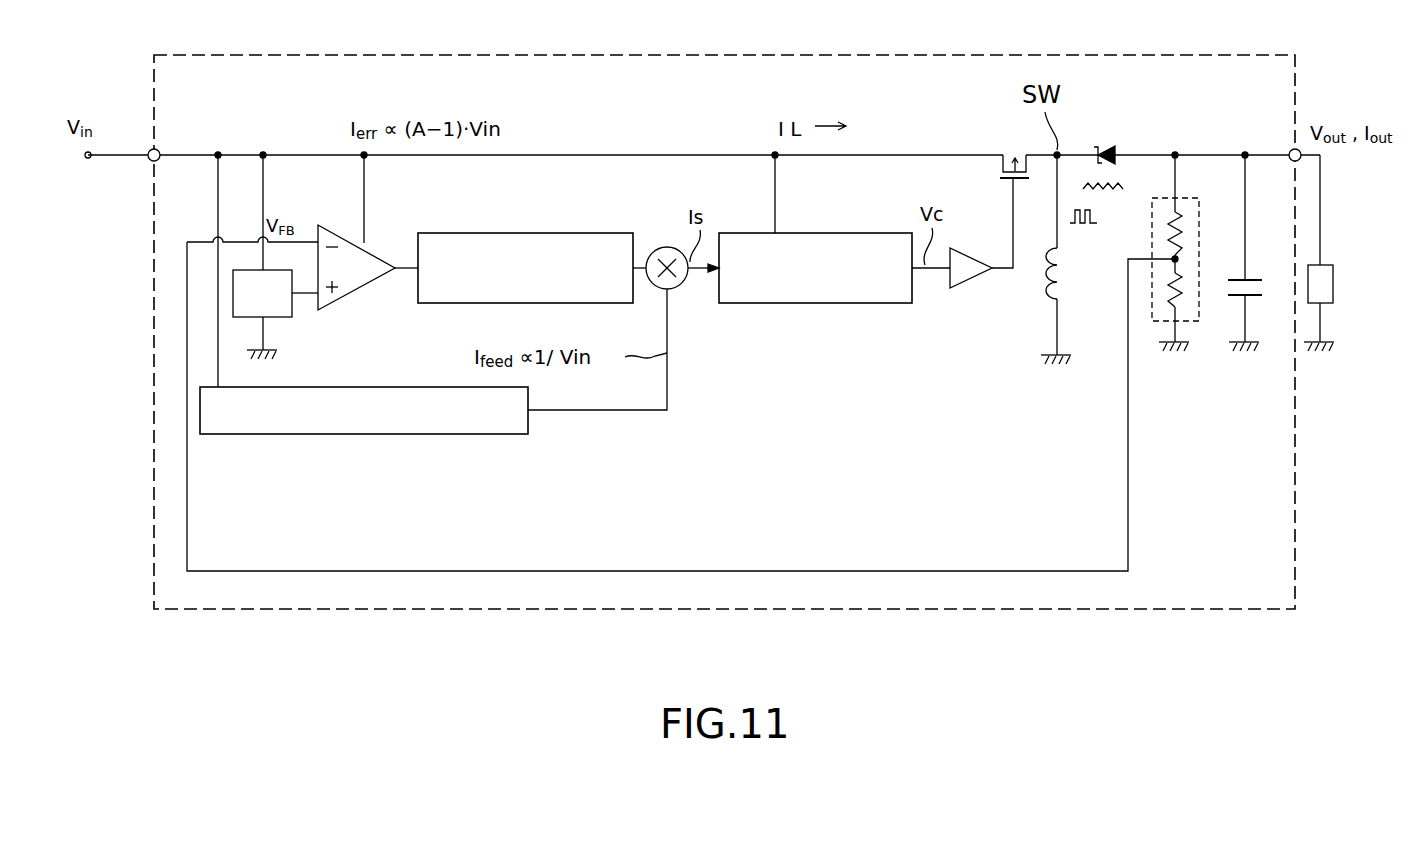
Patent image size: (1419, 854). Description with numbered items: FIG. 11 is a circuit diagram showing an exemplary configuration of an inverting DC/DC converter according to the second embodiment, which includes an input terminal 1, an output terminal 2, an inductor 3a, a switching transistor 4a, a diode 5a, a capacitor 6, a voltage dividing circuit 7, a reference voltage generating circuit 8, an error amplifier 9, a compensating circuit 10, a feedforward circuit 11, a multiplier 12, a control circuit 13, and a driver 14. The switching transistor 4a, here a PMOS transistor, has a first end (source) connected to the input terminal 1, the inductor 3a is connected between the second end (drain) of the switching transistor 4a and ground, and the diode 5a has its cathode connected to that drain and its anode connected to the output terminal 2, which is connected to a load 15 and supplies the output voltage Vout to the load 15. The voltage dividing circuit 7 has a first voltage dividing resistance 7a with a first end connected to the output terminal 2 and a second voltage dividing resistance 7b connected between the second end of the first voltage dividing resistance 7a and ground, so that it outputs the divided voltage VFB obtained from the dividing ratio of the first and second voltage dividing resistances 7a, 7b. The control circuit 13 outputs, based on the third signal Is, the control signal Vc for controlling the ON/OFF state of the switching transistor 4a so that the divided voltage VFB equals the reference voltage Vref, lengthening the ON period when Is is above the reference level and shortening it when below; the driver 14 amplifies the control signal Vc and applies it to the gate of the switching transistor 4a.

The input terminal 1 is at (150, 150).
The output terminal 2 is at (1290, 150).
The inductor 3a is at (1068, 275).
The switching transistor 4a is at (1008, 160).
The diode 5a is at (1105, 140).
The capacitor 6 is at (1250, 275).
The voltage dividing circuit 7 is at (1168, 229).
The first voltage dividing resistance 7a is at (1168, 230).
The second voltage dividing resistance 7b is at (1178, 285).
The reference voltage generating circuit 8 is at (233, 287).
The error amplifier 9 is at (405, 265).
The compensating circuit 10 is at (590, 233).
The feedforward circuit 11 is at (305, 434).
The multiplier 12 is at (667, 247).
The control circuit 13 is at (848, 233).
The driver 14 is at (968, 250).
The load 15 is at (1325, 262).